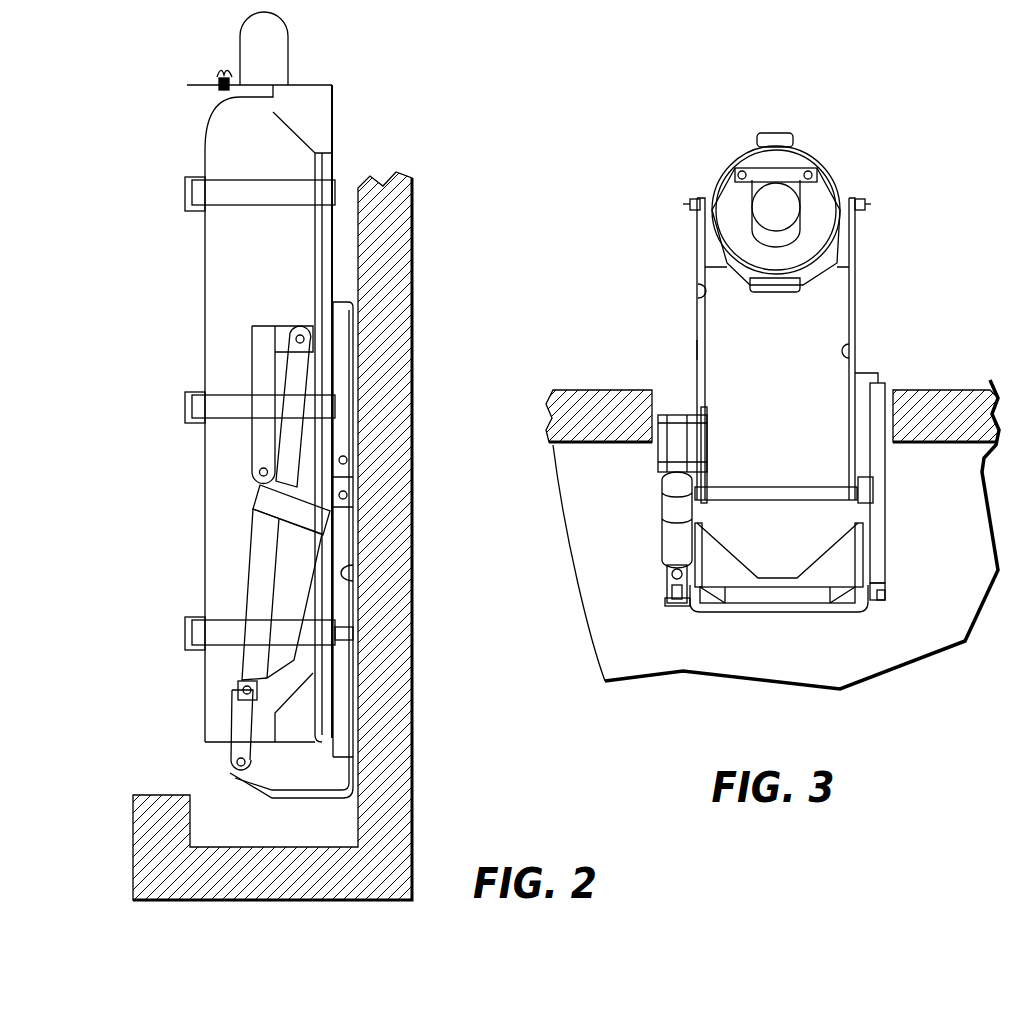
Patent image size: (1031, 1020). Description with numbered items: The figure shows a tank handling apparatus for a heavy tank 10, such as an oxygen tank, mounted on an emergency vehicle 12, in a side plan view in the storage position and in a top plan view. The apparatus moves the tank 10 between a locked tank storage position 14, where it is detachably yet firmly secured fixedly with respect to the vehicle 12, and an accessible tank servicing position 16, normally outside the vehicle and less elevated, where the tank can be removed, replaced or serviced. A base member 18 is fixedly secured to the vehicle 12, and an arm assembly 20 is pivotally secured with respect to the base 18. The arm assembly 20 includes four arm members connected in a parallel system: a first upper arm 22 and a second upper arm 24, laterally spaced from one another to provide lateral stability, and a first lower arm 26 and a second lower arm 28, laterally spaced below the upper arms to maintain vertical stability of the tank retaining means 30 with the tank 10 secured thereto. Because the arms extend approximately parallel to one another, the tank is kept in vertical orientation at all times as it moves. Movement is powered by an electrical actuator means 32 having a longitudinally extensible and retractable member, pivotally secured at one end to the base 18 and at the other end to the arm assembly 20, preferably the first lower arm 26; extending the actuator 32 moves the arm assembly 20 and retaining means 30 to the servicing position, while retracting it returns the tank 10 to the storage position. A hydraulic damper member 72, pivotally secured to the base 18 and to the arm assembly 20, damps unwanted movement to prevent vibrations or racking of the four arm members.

In FIG. 2, the tank 10 is at (274, 256).
In FIG. 3, the tank 10 is at (803, 231).
In FIG. 2, the emergency vehicle 12 is at (393, 790).
In FIG. 3, the emergency vehicle 12 is at (937, 428).
In FIG. 2, the locked tank storage position 14 is at (204, 144).
In FIG. 3, the accessible tank servicing position 16 is at (848, 158).
In FIG. 2, the base member 18 is at (355, 575).
In FIG. 3, the base member 18 is at (710, 602).
In FIG. 2, the arm assembly 20 is at (250, 434).
In FIG. 3, the arm assembly 20 is at (697, 311).
In FIG. 2, the first upper arm 22 is at (290, 372).
In FIG. 3, the first upper arm 22 is at (697, 347).
In FIG. 3, the second upper arm 24 is at (856, 322).
In FIG. 2, the first lower arm 26 is at (257, 362).
In FIG. 3, the first lower arm 26 is at (705, 290).
In FIG. 3, the second lower arm 28 is at (856, 354).
In FIG. 2, the tank retaining means 30 is at (199, 404).
In FIG. 3, the tank retaining means 30 is at (808, 277).
In FIG. 2, the electrical actuator means 32 is at (241, 571).
In FIG. 3, the electrical actuator means 32 is at (675, 452).
In FIG. 3, the hydraulic damper member 72 is at (883, 552).